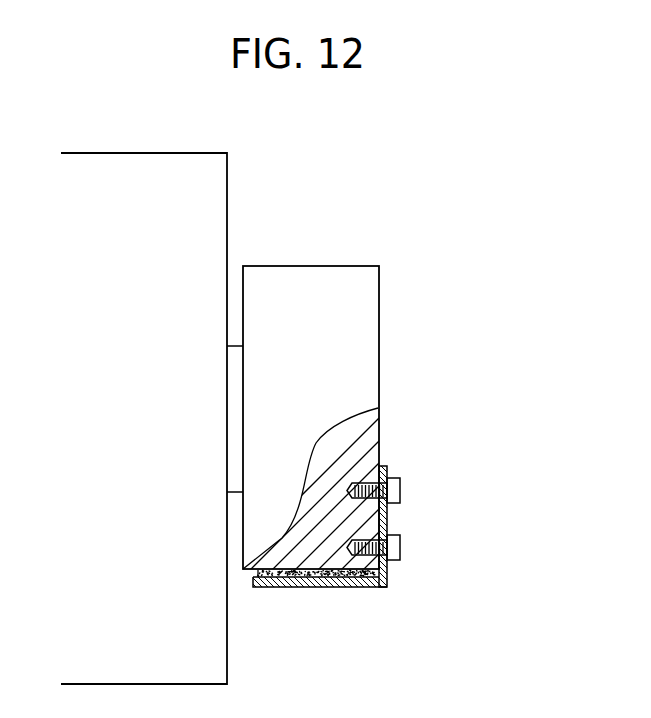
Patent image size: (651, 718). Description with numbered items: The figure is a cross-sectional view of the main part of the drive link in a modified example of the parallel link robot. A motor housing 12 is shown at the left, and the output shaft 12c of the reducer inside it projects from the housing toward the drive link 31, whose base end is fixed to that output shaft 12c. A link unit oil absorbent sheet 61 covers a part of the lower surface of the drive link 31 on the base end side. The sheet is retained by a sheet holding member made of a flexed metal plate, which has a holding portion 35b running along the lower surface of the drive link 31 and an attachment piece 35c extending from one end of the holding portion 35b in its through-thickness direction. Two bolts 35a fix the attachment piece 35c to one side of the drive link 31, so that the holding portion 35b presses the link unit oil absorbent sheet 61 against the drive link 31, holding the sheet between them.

The motor housing 12 is at (143, 153).
The output shaft of the reducer 12c is at (238, 346).
The drive link 31 is at (380, 320).
The bolts 35a is at (400, 493).
The holding portion 35b is at (300, 588).
The attachment piece 35c is at (387, 578).
The link unit oil absorbent sheet 61 is at (348, 588).